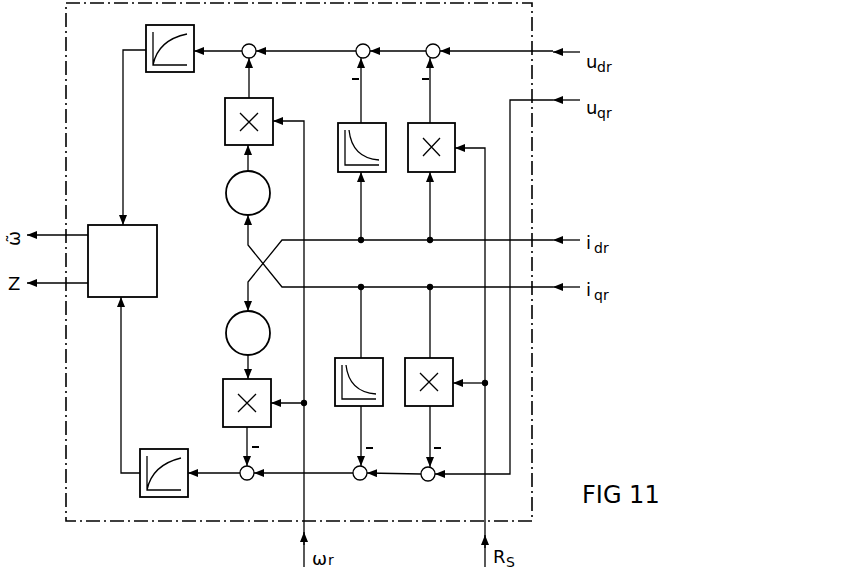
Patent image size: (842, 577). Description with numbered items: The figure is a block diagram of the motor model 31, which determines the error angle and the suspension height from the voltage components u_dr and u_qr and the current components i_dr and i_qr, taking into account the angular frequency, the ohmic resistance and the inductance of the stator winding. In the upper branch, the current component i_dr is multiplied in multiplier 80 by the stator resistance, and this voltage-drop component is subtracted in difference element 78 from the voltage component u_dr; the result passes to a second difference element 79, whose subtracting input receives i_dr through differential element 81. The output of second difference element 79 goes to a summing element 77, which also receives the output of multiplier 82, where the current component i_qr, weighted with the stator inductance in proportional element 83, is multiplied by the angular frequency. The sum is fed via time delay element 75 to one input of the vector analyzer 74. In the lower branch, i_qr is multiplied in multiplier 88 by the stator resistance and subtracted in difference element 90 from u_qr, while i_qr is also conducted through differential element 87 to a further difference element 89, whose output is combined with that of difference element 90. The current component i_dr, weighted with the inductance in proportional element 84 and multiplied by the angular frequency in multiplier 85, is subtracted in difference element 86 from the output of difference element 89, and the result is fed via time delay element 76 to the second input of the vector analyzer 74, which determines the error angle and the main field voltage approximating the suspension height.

The motor model 31 is at (64, 441).
The vector analyzer 74 is at (157, 263).
The time delay element 75 is at (183, 72).
The time delay element 76 is at (154, 449).
The summing element 77 is at (247, 44).
The difference element 78 is at (430, 44).
The second difference element 79 is at (362, 32).
The multiplier 80 is at (442, 123).
The differential element 81 is at (372, 123).
The multiplier 82 is at (278, 93).
The proportional element 83 is at (226, 187).
The proportional element 84 is at (226, 336).
The multiplier 85 is at (223, 388).
The difference element 86 is at (245, 480).
The differential element 87 is at (373, 406).
The multiplier 88 is at (440, 406).
The further difference element 89 is at (358, 480).
The difference element 90 is at (426, 481).